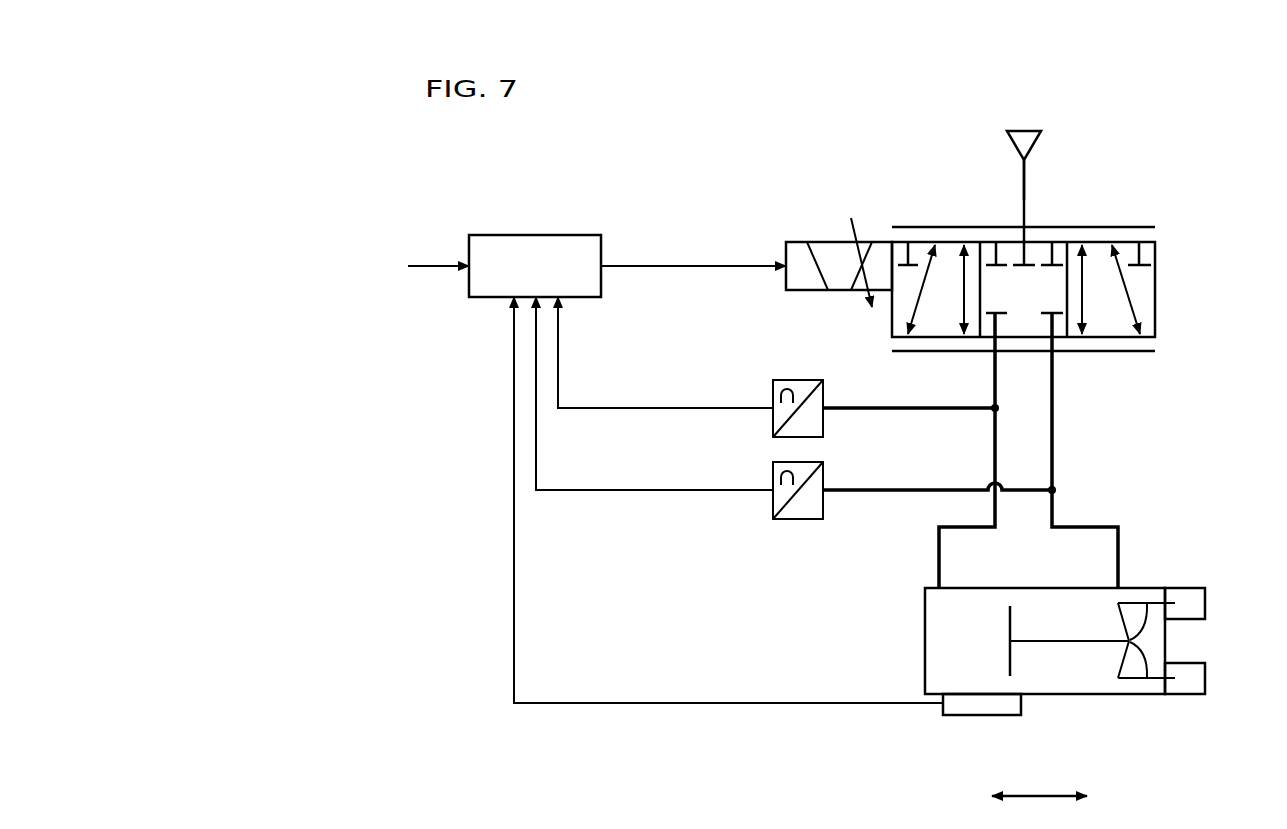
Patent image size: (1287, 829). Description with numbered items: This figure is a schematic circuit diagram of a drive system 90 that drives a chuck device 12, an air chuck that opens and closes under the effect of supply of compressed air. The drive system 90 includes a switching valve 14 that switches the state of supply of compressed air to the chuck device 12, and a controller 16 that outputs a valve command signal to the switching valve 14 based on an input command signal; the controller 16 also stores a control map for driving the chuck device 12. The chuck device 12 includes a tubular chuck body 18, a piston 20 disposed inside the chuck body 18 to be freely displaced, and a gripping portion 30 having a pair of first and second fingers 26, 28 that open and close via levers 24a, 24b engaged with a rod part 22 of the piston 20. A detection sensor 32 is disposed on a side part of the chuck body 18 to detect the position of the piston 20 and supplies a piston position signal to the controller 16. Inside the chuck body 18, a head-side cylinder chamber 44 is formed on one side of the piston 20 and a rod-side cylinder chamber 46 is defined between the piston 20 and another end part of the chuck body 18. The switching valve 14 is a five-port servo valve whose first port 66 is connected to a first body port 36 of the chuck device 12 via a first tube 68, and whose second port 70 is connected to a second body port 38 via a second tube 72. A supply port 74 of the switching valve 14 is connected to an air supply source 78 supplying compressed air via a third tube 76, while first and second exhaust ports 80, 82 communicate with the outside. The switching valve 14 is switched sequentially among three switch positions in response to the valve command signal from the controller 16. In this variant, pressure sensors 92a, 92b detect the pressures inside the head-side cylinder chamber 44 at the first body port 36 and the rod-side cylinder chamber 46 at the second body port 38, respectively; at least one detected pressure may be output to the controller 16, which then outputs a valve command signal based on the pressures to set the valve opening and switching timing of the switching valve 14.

The chuck device 12 is at (1062, 648).
The switching valve 14 is at (828, 218).
The controller 16 is at (535, 235).
The chuck body 18 is at (1107, 696).
The piston 20 is at (1008, 628).
The rod part 22 is at (1025, 640).
The lever 24a is at (1127, 628).
The lever 24b is at (1128, 661).
The first finger 26 is at (1200, 607).
The second finger 28 is at (1200, 682).
The gripping portion 30 is at (1190, 703).
The detection sensor 32 is at (982, 716).
The first body port 36 is at (936, 587).
The second body port 38 is at (1116, 586).
The head-side cylinder chamber 44 is at (937, 648).
The rod-side cylinder chamber 46 is at (1040, 672).
The first port 66 is at (993, 340).
The first tube 68 is at (995, 456).
The second port 70 is at (1053, 340).
The second tube 72 is at (1053, 430).
The supply port 74 is at (1023, 242).
The third tube 76 is at (1027, 177).
The air supply source 78 is at (1020, 130).
The first exhaust port 80 is at (993, 242).
The second exhaust port 82 is at (1052, 242).
The drive system 90 is at (661, 158).
The pressure sensor 92a is at (773, 384).
The pressure sensor 92b is at (773, 466).